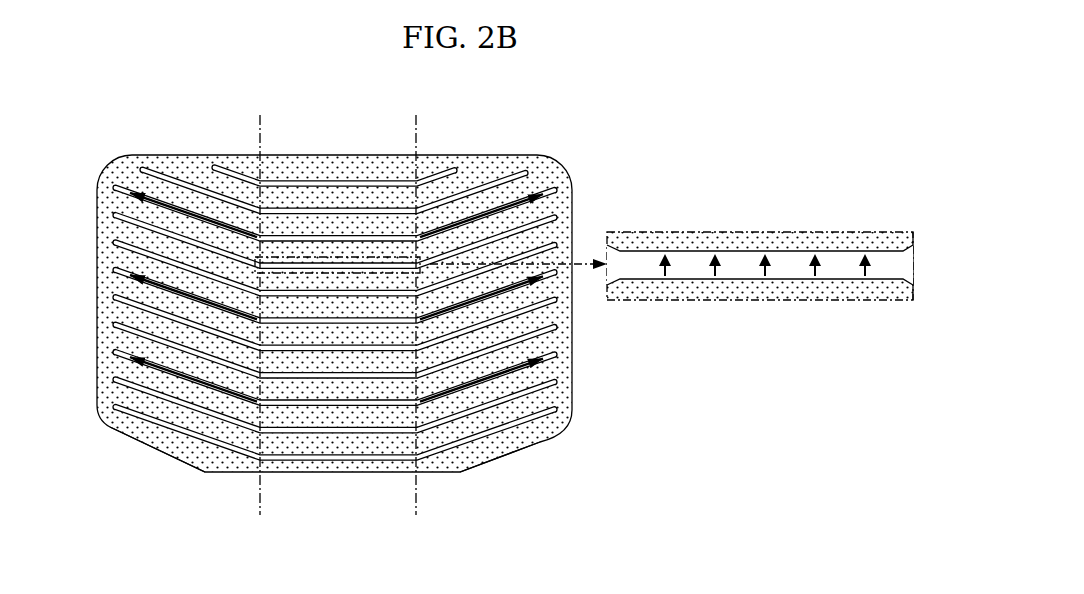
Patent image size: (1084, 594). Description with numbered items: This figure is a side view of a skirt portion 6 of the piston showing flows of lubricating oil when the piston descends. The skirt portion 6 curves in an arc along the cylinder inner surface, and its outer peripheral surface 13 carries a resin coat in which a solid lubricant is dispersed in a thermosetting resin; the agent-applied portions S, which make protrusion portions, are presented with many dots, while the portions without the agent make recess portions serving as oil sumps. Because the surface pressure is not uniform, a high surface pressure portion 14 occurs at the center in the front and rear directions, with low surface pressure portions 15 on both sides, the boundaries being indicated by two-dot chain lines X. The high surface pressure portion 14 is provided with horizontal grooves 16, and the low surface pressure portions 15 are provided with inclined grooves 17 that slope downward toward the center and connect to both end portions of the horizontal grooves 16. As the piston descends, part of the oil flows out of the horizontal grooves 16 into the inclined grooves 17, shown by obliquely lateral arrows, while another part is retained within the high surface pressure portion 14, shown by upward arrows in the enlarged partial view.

The skirt portion 6 is at (498, 326).
The outer peripheral surface 13 is at (327, 347).
The high surface pressure portion 14 is at (318, 173).
The low surface pressure portion 15 is at (192, 172).
The horizontal groove 16 is at (307, 458).
The inclined groove 17 is at (160, 440).
The agent-applied portion S is at (191, 460).
The two-dot chain line X is at (337, 328).